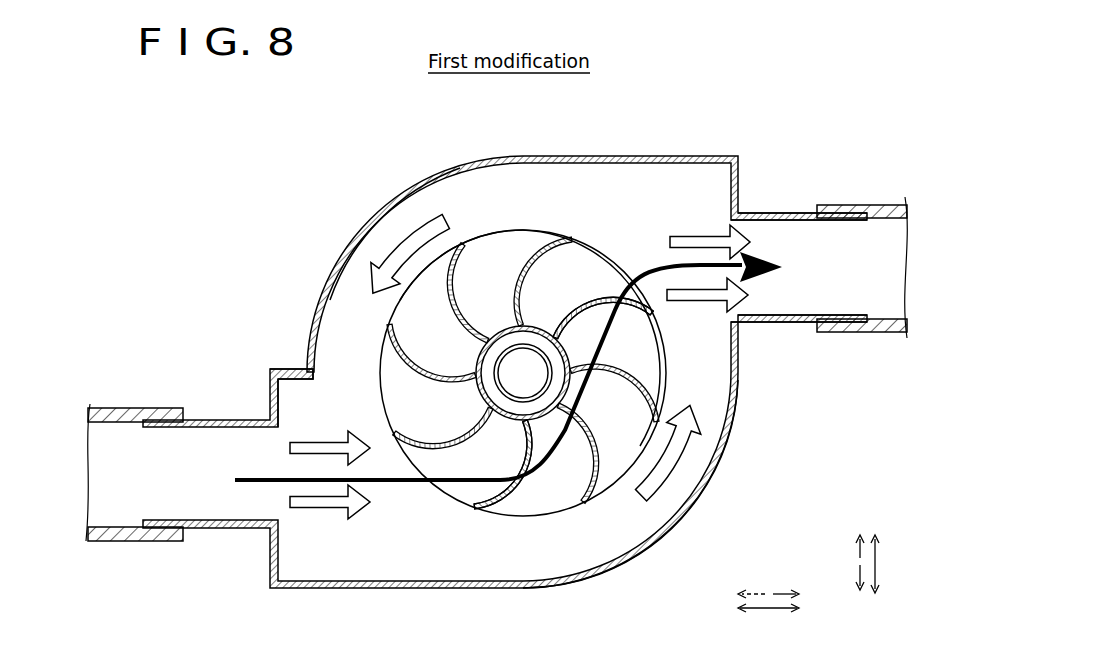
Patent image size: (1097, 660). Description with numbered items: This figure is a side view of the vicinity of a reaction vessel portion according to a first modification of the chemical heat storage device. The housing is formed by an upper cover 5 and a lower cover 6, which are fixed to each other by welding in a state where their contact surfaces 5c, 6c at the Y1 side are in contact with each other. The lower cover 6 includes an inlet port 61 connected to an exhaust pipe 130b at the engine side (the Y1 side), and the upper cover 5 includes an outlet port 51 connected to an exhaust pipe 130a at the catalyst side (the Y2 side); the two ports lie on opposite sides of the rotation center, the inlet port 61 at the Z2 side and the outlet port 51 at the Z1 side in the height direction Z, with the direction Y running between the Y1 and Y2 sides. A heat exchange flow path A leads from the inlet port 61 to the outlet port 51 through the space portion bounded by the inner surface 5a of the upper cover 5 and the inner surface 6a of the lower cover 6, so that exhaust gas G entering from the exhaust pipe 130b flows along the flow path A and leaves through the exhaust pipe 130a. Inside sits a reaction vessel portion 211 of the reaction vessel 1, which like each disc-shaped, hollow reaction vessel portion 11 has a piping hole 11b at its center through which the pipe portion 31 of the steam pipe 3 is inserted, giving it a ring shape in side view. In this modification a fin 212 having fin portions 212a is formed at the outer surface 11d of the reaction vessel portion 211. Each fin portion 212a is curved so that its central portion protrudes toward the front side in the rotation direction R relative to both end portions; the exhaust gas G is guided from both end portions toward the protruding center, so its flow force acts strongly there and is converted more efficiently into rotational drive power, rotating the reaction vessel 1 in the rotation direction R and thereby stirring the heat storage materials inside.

The reaction vessel 1 is at (591, 310).
The steam pipe 3 is at (533, 262).
The upper cover 5 is at (330, 298).
The inner surface of the upper cover 5a is at (357, 243).
The contact surface 5c is at (285, 380).
The lower cover 6 is at (683, 513).
The inner surface of the lower cover 6a is at (576, 566).
The contact surface 6c is at (300, 368).
The reaction vessel portion 11 is at (621, 253).
The piping hole 11b is at (518, 323).
The outer surface of the reaction vessel portion 11d is at (590, 262).
The pipe portion 31 is at (530, 345).
The outlet port 51 is at (802, 215).
The inlet port 61 is at (205, 420).
The exhaust pipe 130a is at (880, 205).
The exhaust pipe 130b is at (137, 408).
The reaction vessel portion 211 is at (490, 242).
The fin 212 is at (682, 373).
The fin portion 212a is at (566, 236).
The rotation direction R is at (405, 247).
The exhaust gas G is at (720, 236).
The heat exchange flow path A is at (407, 487).
The Y1 side Y1 is at (750, 583).
The Y2 side Y2 is at (785, 583).
The direction Y is at (768, 620).
The Z1 side Z1 is at (846, 548).
The Z2 side Z2 is at (846, 578).
The direction Z is at (883, 564).